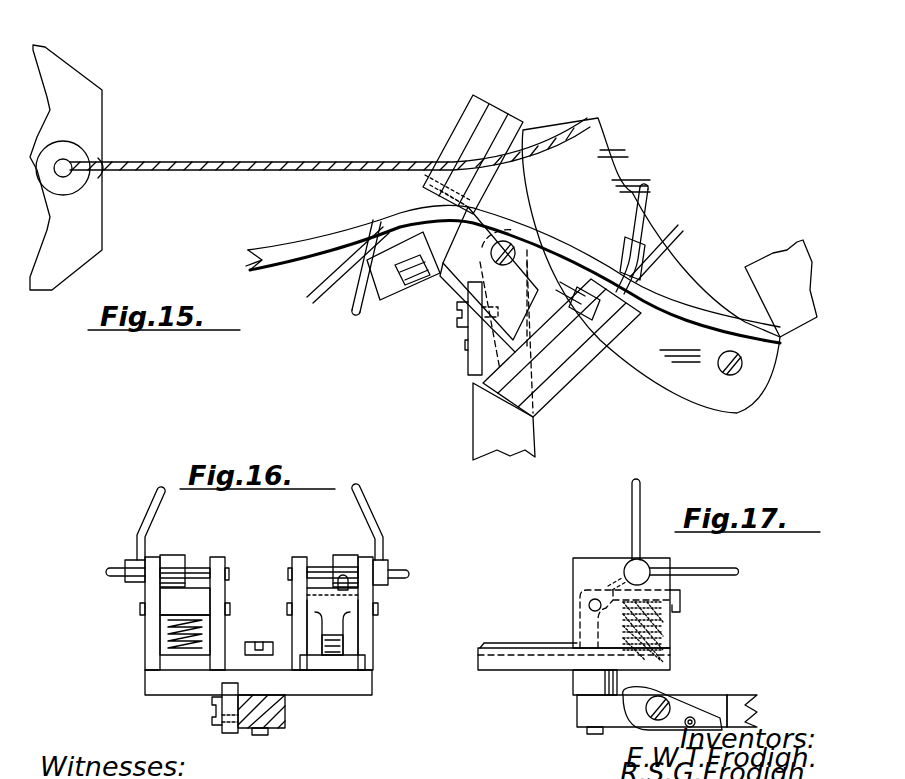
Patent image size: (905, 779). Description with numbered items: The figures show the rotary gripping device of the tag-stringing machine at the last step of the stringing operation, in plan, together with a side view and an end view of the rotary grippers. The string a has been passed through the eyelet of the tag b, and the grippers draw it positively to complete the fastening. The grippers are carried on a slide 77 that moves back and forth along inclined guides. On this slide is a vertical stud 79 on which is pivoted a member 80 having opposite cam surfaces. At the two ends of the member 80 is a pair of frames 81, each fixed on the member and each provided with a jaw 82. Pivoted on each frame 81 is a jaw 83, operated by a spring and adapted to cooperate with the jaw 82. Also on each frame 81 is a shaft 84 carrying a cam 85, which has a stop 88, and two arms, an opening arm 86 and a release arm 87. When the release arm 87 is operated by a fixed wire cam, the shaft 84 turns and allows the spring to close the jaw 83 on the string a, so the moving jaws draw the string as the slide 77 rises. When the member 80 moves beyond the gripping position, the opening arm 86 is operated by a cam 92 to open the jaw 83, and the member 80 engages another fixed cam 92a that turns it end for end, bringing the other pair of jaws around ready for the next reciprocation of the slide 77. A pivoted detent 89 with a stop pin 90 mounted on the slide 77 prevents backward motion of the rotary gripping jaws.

In FIG. 15, the string a is at (200, 162).
In FIG. 15, the tag b is at (88, 113).
In FIG. 15, the slide 77 is at (520, 440).
In FIG. 16, the slide 77 is at (272, 718).
In FIG. 17, the slide 77 is at (752, 722).
In FIG. 15, the vertical stud 79 is at (520, 245).
In FIG. 16, the vertical stud 79 is at (260, 736).
In FIG. 15, the member 80 is at (480, 232).
In FIG. 16, the member 80 is at (156, 682).
In FIG. 17, the member 80 is at (573, 682).
In FIG. 17, the frame 81 is at (573, 568).
In FIG. 15, the jaw 82 is at (472, 100).
In FIG. 16, the jaw 82 is at (355, 662).
In FIG. 17, the jaw 82 is at (492, 670).
In FIG. 15, the jaw 83 is at (490, 120).
In FIG. 16, the jaw 83 is at (340, 646).
In FIG. 17, the jaw 83 is at (512, 643).
In FIG. 15, the shaft 84 is at (430, 290).
In FIG. 16, the shaft 84 is at (192, 568).
In FIG. 15, the cam 85 is at (400, 280).
In FIG. 16, the cam 85 is at (170, 558).
In FIG. 17, the cam 85 is at (643, 560).
In FIG. 15, the opening arm 86 is at (676, 235).
In FIG. 16, the opening arm 86 is at (112, 568).
In FIG. 17, the opening arm 86 is at (697, 578).
In FIG. 15, the release arm 87 is at (650, 190).
In FIG. 16, the release arm 87 is at (156, 493).
In FIG. 17, the release arm 87 is at (632, 490).
In FIG. 15, the stop 88 is at (588, 320).
In FIG. 16, the stop 88 is at (340, 590).
In FIG. 17, the stop 88 is at (612, 582).
In FIG. 15, the pivoted detent 89 is at (468, 345).
In FIG. 16, the pivoted detent 89 is at (230, 690).
In FIG. 17, the pivoted detent 89 is at (660, 695).
In FIG. 15, the stop pin 90 is at (466, 350).
In FIG. 16, the stop pin 90 is at (212, 718).
In FIG. 17, the stop pin 90 is at (693, 720).
In FIG. 15, the cam 92 is at (283, 252).
In FIG. 15, the fixed cam 92a is at (600, 145).